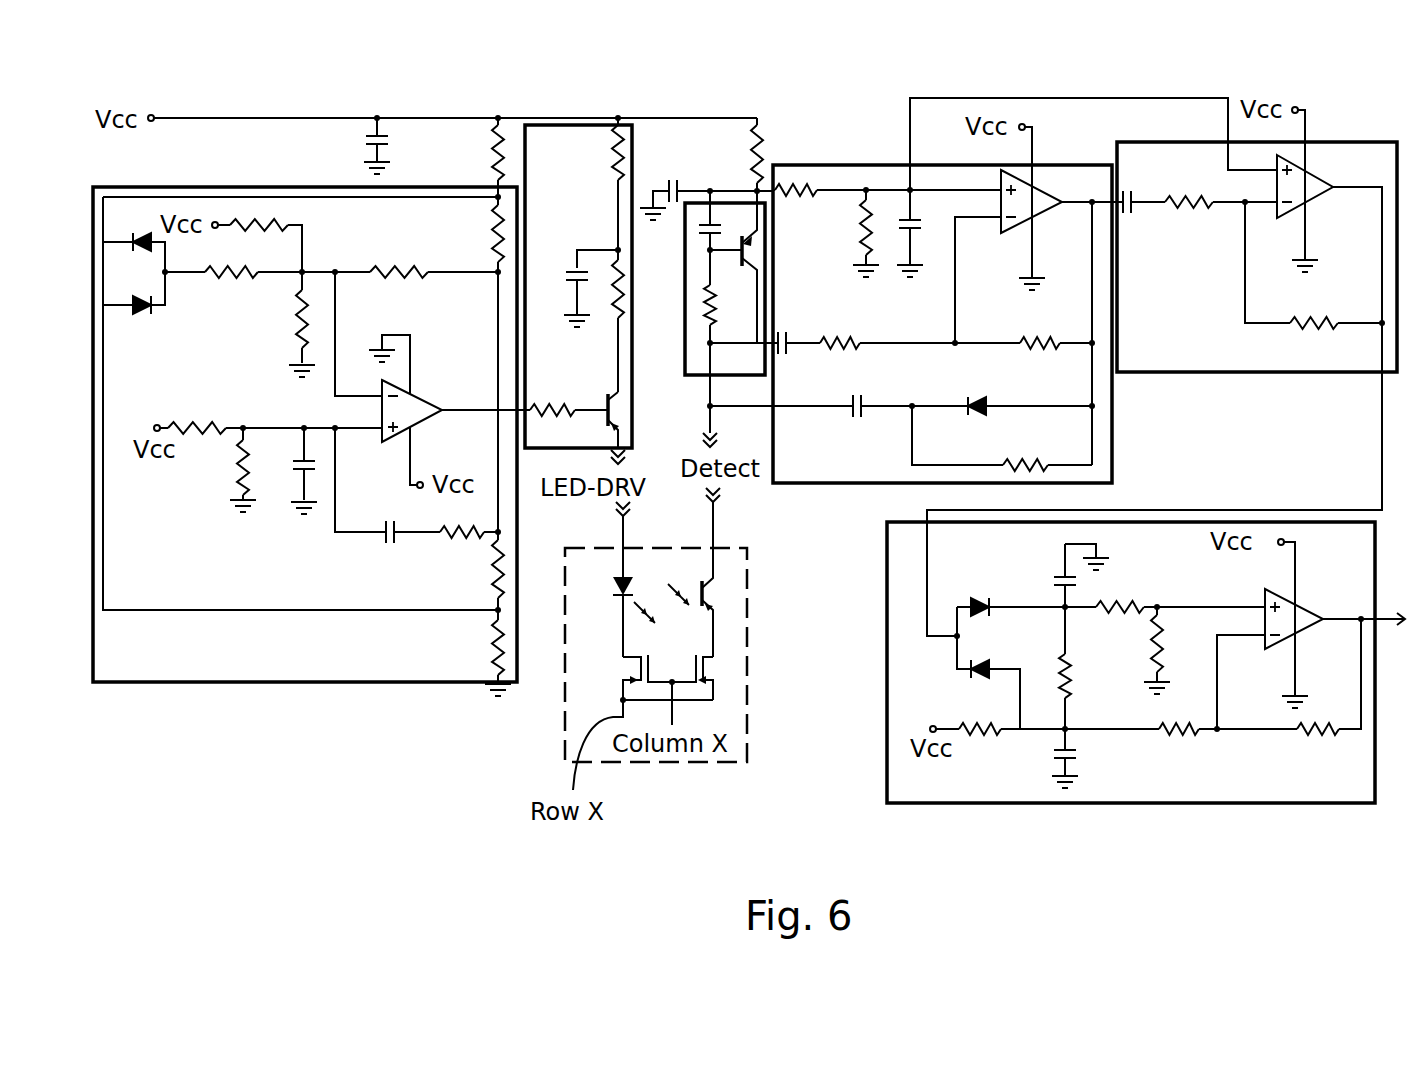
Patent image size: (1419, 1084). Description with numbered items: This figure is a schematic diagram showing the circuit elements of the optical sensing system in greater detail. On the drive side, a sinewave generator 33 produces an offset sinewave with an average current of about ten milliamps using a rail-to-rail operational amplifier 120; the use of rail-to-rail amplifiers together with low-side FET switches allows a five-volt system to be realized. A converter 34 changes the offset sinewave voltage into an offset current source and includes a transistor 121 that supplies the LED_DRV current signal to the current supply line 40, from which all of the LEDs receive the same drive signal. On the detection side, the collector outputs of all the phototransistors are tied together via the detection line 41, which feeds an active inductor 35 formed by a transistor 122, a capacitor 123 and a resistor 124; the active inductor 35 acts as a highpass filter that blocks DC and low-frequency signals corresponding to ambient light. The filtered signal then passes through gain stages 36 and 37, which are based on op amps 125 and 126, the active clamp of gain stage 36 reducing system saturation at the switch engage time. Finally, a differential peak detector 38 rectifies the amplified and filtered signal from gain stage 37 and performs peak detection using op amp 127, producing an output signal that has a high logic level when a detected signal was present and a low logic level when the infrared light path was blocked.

The sinewave generator 33 is at (297, 684).
The converter 34 is at (552, 118).
The active inductor 35 is at (700, 378).
The gain stage 36 is at (832, 165).
The gain stage 37 is at (1358, 142).
The differential peak detector 38 is at (971, 806).
The current supply line 40 is at (618, 530).
The detection line 41 is at (718, 528).
The rail-to-rail operational amplifier 120 is at (424, 397).
The transistor 121 is at (610, 397).
The transistor 122 is at (752, 266).
The capacitor 123 is at (706, 203).
The resistor 124 is at (712, 322).
The op amp 125 is at (1013, 230).
The op amp 126 is at (1318, 200).
The op amp 127 is at (1309, 608).